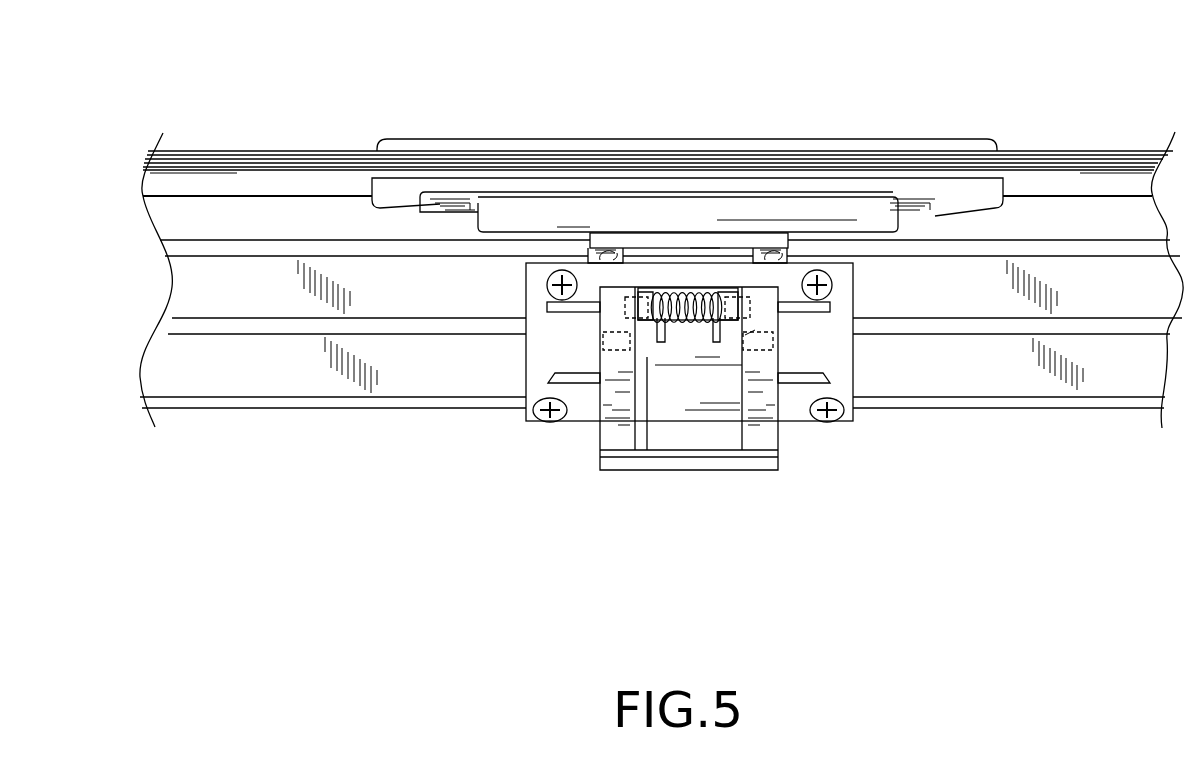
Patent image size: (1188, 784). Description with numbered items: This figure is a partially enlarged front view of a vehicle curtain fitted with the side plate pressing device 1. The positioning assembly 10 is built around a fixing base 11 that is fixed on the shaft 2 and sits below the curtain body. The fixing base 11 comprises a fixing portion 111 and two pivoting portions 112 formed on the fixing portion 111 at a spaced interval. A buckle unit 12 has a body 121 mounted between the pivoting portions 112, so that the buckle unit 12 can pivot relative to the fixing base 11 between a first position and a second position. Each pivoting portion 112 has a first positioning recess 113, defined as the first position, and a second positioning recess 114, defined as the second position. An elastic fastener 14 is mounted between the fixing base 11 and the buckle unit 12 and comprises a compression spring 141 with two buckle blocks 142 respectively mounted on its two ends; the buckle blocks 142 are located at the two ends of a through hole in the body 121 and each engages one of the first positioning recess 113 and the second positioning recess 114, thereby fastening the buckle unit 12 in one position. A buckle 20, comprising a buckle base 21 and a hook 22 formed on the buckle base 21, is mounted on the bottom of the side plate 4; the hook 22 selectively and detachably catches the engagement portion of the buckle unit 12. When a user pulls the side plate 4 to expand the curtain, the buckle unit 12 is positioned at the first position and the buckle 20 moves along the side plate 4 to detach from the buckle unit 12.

The side plate pressing device 1 is at (829, 510).
The shaft 2 is at (1049, 423).
The side plate 4 is at (1090, 160).
The positioning assembly 10 is at (757, 480).
The fixing base 11 is at (597, 476).
The buckle unit 12 is at (675, 392).
The elastic fastener 14 is at (689, 280).
The buckle 20 is at (770, 224).
The buckle base 21 is at (608, 237).
The hook 22 is at (703, 257).
The fixing portion 111 is at (840, 357).
The pivoting portions 112 is at (615, 383).
The first positioning recess 113 is at (760, 310).
The second positioning recess 114 is at (747, 335).
The body 121 is at (647, 357).
The compression spring 141 is at (646, 292).
The buckle blocks 142 is at (672, 295).